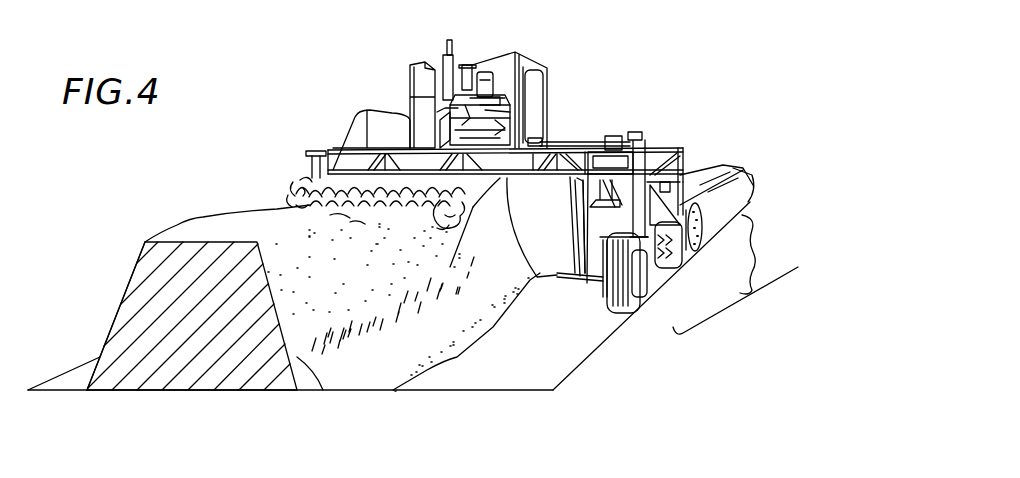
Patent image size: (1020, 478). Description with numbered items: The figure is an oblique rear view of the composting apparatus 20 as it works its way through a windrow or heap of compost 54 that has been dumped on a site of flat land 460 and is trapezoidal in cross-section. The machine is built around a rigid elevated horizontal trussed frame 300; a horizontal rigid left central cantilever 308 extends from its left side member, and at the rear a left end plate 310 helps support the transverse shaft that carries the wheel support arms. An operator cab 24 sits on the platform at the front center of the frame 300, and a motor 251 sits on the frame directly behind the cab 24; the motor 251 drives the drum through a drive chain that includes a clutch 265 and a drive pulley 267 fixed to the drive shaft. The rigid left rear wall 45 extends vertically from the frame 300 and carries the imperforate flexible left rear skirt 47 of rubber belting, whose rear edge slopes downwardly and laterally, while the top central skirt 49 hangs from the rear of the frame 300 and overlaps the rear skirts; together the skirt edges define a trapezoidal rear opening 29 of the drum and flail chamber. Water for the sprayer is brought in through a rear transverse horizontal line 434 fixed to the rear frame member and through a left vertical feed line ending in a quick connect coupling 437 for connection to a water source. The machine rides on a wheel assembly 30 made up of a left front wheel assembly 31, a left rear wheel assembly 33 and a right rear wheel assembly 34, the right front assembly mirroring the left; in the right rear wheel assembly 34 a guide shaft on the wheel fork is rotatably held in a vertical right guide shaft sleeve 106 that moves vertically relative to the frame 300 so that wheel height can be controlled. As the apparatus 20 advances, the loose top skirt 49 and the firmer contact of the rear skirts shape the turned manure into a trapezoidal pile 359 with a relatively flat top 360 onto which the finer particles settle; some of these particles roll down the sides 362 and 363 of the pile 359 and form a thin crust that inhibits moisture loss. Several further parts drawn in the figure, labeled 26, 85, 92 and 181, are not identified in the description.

The apparatus 20 is at (728, 137).
The operator cab 24 is at (545, 70).
The engine 26 is at (507, 87).
The trapezoidal rear opening 29 is at (450, 265).
The wheel assembly 30 is at (675, 296).
The left front wheel assembly 31 is at (798, 267).
The left rear wheel assembly 33 is at (647, 280).
The right rear wheel assembly 34 is at (392, 110).
The rigid left rear wall 45 is at (563, 224).
The flexible left rear skirt 47 is at (523, 224).
The top central skirt 49 is at (480, 196).
The windrow or heap of compost 54 is at (136, 260).
The cutting disc 85 is at (700, 237).
The rear wheel 92 is at (690, 267).
The right guide shaft sleeve 106 is at (312, 160).
The vertical post 181 is at (640, 140).
The motor 251 is at (488, 90).
The clutch 265 is at (542, 133).
The drive pulley 267 is at (616, 136).
The horizontal frame 300 is at (332, 151).
The left central cantilever 308 is at (697, 140).
The left end plate 310 is at (587, 147).
The pile 359 is at (201, 308).
The flat top 360 is at (196, 242).
The side of the mass 362 is at (127, 293).
The side of the mass 363 is at (290, 387).
The rear transverse horizontal line 434 is at (551, 225).
The quick connect coupling 437 is at (585, 273).
The site of flat land 460 is at (747, 202).